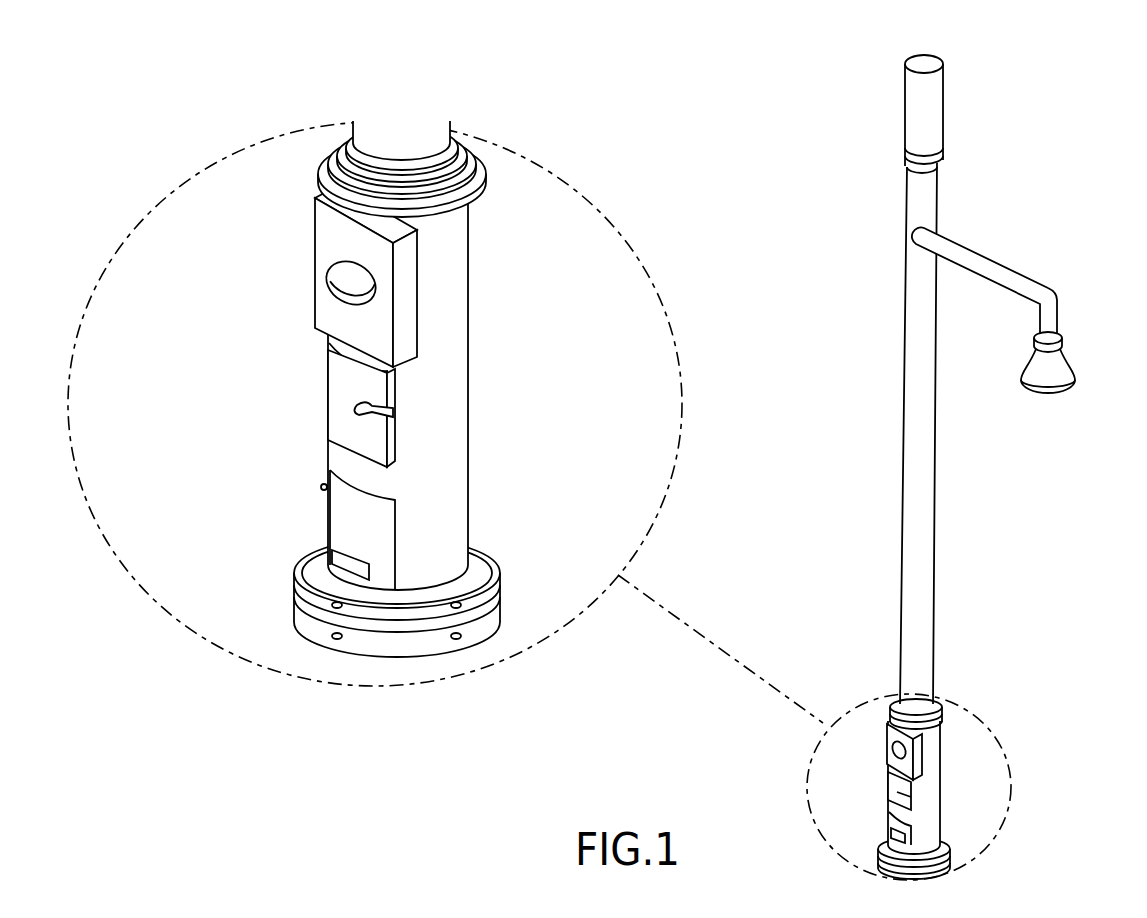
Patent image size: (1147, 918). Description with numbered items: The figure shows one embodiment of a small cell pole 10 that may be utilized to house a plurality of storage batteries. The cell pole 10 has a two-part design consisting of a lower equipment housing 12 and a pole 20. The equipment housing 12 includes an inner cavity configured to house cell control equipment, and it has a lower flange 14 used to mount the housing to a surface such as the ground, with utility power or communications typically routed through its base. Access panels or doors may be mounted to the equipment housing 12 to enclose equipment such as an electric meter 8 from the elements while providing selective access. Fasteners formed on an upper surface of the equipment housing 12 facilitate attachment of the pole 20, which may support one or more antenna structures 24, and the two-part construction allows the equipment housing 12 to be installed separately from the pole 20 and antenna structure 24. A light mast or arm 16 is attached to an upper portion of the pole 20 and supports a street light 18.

The electric meter 8 is at (333, 252).
The small cell pole 10 is at (775, 372).
The lower equipment housing 12 is at (510, 304).
The lower flange 14 is at (494, 568).
The light mast or arm 16 is at (999, 256).
The street light 18 is at (1063, 354).
The pole 20 is at (911, 446).
The antenna structure 24 is at (913, 113).